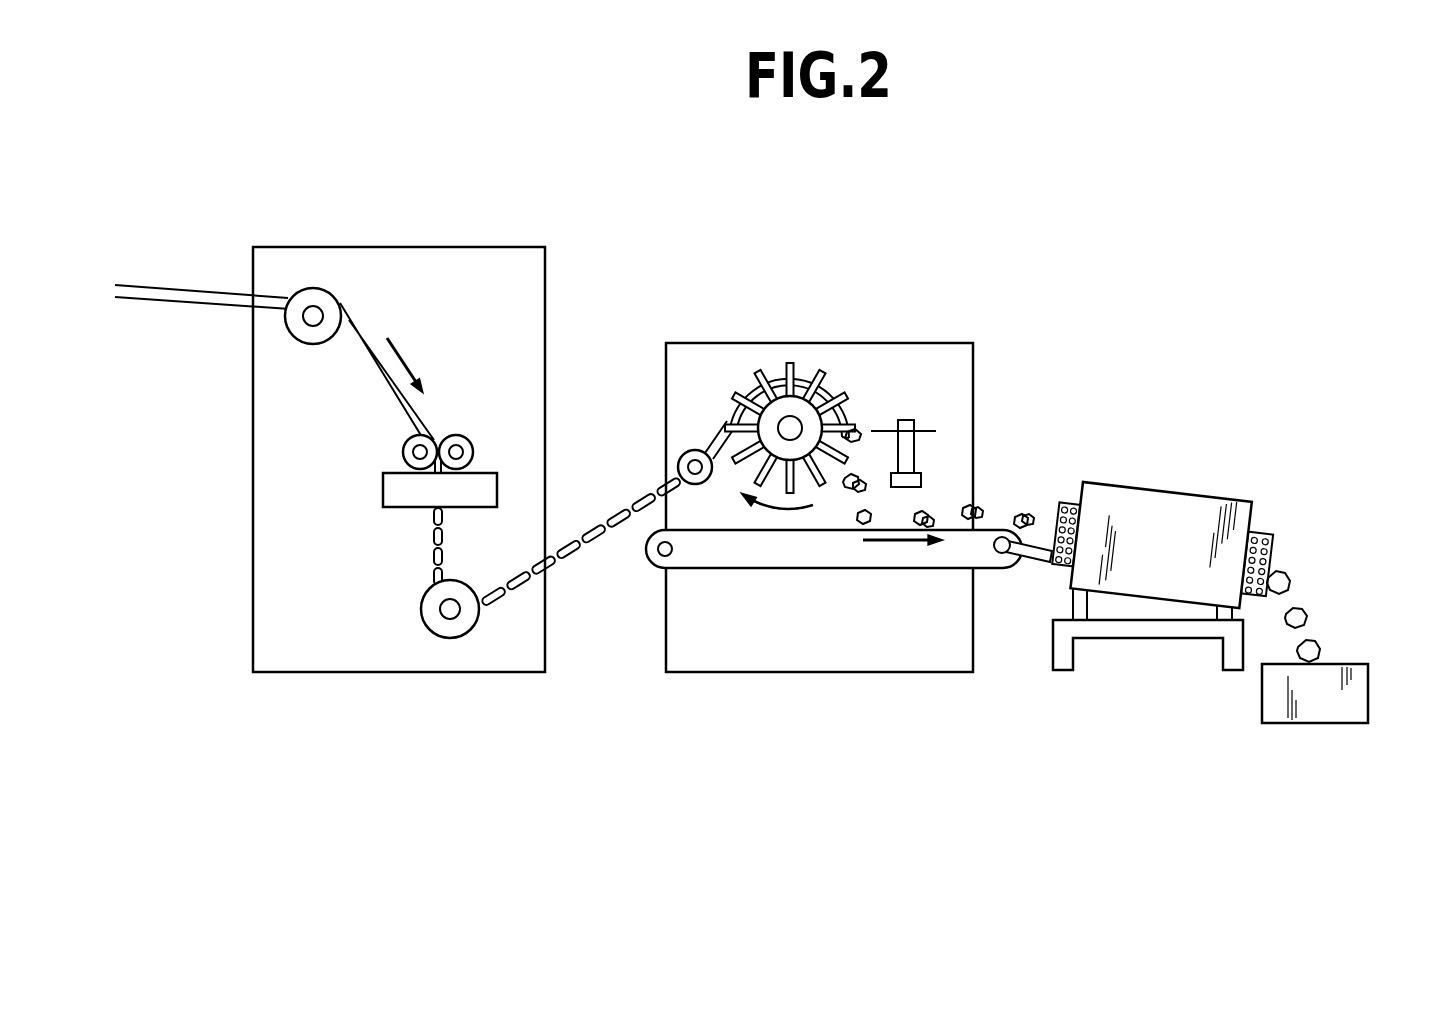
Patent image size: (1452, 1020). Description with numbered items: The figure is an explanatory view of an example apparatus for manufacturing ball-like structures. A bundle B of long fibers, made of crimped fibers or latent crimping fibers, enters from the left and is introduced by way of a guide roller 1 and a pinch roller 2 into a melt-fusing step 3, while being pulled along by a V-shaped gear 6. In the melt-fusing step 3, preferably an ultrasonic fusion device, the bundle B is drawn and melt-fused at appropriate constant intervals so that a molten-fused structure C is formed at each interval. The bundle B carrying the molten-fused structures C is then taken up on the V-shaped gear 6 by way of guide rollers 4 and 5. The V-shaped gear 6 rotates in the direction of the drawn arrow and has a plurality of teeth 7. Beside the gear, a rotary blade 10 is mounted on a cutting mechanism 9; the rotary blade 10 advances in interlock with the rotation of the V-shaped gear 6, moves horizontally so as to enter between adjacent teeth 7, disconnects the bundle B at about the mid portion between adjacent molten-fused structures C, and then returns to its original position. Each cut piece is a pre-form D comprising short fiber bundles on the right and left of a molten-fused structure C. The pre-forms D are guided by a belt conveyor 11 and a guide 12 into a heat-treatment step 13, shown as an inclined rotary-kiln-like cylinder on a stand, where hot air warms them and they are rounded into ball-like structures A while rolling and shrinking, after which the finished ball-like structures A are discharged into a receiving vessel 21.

The guide roller 1 is at (300, 331).
The pinch roller 2 is at (471, 446).
The melt-fusing step 3 is at (497, 487).
The guide roller 4 is at (453, 630).
The guide roller 5 is at (683, 466).
The V-shaped gear 6 is at (821, 400).
The teeth 7 is at (797, 366).
The cutting mechanism 9 is at (922, 481).
The rotary blade 10 is at (931, 428).
The belt conveyor 11 is at (775, 537).
The guide 12 is at (1040, 560).
The heat-treatment step 13 is at (1197, 515).
The receiving vessel 21 is at (1368, 696).
The finished pieces A is at (1318, 643).
The bundle of long fibers B is at (179, 290).
The molten-fused structure C is at (620, 533).
The pre-form D is at (843, 497).